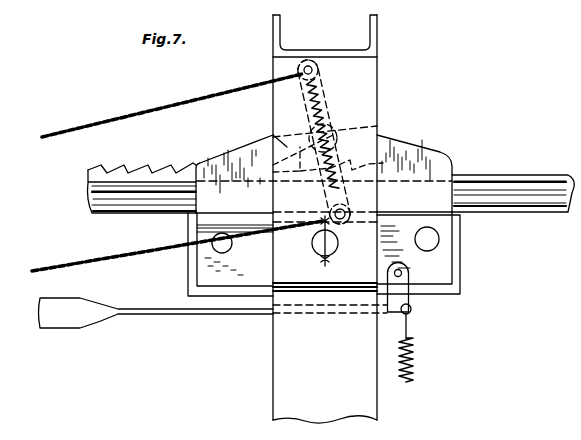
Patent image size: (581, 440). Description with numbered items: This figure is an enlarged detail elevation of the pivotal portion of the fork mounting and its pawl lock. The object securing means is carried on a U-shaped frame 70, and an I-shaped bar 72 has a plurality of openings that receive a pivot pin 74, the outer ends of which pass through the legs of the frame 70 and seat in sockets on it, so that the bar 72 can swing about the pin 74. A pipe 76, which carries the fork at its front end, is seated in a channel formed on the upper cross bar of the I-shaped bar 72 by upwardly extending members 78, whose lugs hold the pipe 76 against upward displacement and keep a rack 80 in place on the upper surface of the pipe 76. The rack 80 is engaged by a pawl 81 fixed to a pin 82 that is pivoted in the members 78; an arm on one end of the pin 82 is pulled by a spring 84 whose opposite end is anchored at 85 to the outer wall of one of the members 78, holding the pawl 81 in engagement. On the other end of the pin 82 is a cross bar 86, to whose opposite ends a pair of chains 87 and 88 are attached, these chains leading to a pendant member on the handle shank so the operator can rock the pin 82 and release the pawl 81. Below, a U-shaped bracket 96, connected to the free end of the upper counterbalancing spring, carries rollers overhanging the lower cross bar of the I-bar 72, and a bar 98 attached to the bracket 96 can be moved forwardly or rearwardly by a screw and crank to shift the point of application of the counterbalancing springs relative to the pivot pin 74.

The U-shaped frame 70 is at (302, 358).
The I-shaped bar 72 is at (443, 264).
The pivot pin 74 is at (318, 250).
The pipe 76 is at (513, 183).
The members 78 is at (452, 158).
The rack 80 is at (128, 167).
The pawl 81 is at (272, 135).
The pin 82 is at (377, 126).
The spring 84 is at (331, 90).
The spring anchorage 85 is at (323, 187).
The cross bar 86 is at (333, 107).
The chain 87 is at (200, 97).
The chain 88 is at (118, 258).
The U-shaped bracket 96 is at (403, 297).
The bar 98 is at (67, 316).